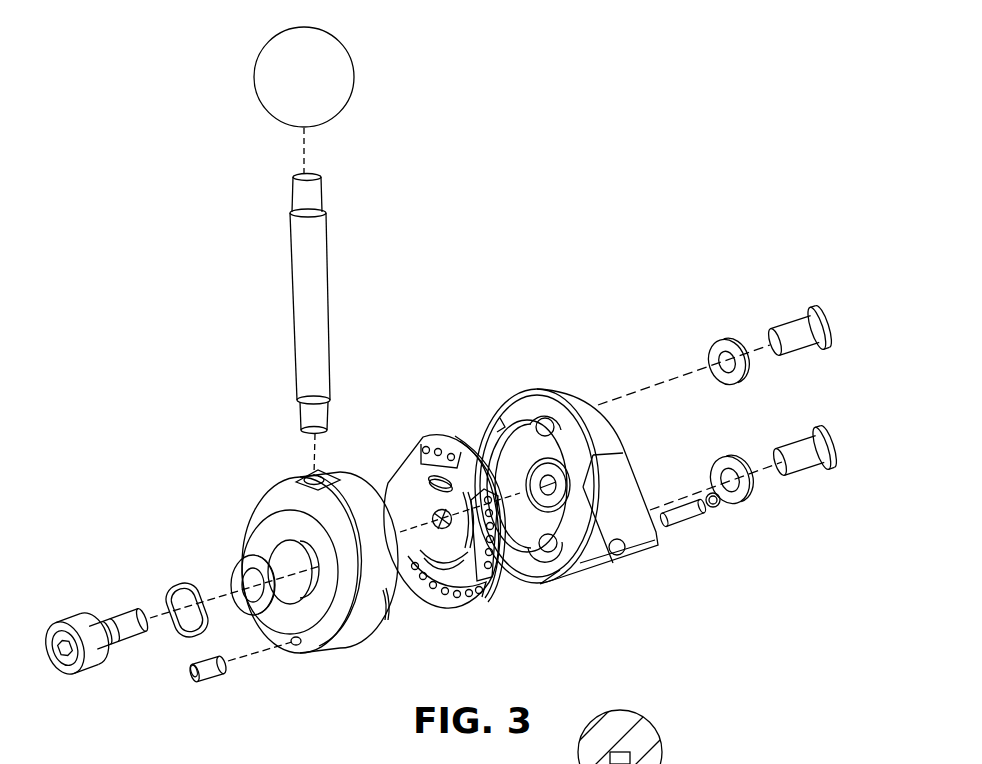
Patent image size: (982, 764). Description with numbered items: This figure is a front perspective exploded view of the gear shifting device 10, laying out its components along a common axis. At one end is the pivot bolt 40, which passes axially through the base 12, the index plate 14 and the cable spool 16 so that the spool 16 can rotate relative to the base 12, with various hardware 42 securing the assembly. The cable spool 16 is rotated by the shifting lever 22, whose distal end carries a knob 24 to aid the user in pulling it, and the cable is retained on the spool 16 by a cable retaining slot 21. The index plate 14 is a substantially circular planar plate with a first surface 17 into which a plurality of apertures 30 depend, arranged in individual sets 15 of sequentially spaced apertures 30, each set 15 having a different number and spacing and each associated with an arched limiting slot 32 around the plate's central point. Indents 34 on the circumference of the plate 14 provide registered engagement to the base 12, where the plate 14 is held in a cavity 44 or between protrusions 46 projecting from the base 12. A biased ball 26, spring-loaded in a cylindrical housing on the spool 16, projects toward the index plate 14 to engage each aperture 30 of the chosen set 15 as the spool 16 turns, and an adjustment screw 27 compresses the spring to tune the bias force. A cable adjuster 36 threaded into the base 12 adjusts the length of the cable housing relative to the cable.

The gear shifting device 10 is at (543, 208).
The base 12 is at (613, 485).
The index plate 14 is at (442, 596).
The sets of apertures 15 is at (424, 476).
The cable spool 16 is at (336, 644).
The first surface 17 is at (437, 520).
The cable retaining slot 21 is at (384, 622).
The shifting lever 22 is at (298, 345).
The knob 24 is at (256, 84).
The biased ball 26 is at (216, 682).
The adjustment screw 27 is at (190, 674).
The apertures 30 is at (497, 567).
The limiting slot 32 is at (430, 522).
The indents 34 is at (434, 512).
The cable adjuster 36 is at (700, 522).
The pivot bolt 40 is at (84, 622).
The hardware 42 is at (806, 476).
The cavity 44 is at (566, 520).
The protrusions 46 is at (497, 417).